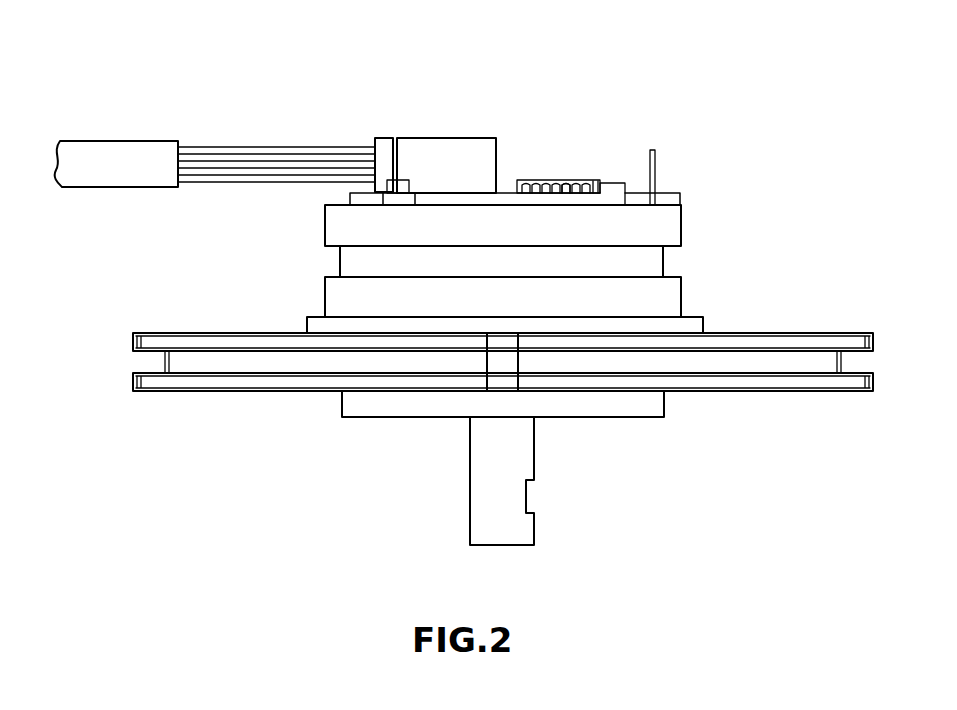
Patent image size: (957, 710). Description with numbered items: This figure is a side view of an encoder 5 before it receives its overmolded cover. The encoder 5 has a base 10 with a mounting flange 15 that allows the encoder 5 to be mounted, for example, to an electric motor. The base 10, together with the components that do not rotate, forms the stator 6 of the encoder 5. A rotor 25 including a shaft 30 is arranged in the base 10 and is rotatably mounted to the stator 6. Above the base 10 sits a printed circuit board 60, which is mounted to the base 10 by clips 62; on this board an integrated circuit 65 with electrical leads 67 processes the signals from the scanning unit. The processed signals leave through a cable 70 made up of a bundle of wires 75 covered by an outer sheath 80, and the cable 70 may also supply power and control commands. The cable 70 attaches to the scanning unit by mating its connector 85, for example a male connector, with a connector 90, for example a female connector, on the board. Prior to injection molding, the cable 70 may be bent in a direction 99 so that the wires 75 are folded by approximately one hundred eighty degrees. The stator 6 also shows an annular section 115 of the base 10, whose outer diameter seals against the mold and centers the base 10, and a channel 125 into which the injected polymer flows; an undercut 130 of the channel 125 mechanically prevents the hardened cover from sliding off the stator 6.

The encoder 5 is at (728, 100).
The stator 6 is at (752, 238).
The base 10 is at (310, 385).
The mounting flange 15 is at (795, 342).
The rotor 25 is at (440, 512).
The shaft 30 is at (502, 481).
The printed circuit board 60 is at (655, 200).
The clips 62 is at (617, 182).
The integrated circuit 65 is at (527, 182).
The electrical leads 67 is at (565, 182).
The cable 70 is at (192, 103).
The wires 75 is at (249, 150).
The outer sheath 80 is at (116, 164).
The connector 85 is at (387, 148).
The connector 90 is at (452, 150).
The direction 99 is at (372, 58).
The annular section 115 is at (310, 327).
The channel 125 is at (340, 262).
The undercut 130 is at (667, 247).